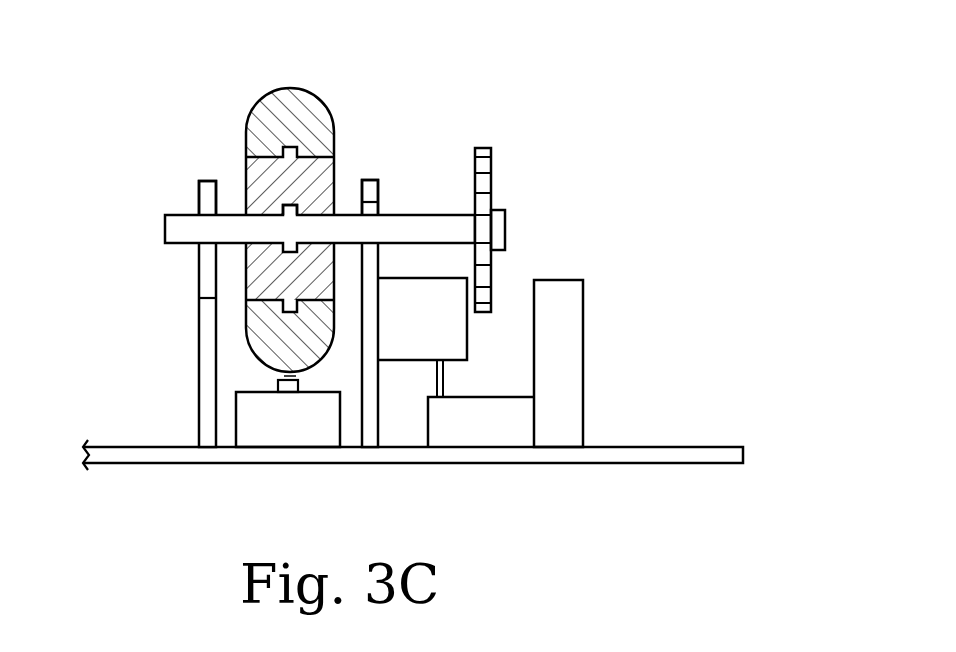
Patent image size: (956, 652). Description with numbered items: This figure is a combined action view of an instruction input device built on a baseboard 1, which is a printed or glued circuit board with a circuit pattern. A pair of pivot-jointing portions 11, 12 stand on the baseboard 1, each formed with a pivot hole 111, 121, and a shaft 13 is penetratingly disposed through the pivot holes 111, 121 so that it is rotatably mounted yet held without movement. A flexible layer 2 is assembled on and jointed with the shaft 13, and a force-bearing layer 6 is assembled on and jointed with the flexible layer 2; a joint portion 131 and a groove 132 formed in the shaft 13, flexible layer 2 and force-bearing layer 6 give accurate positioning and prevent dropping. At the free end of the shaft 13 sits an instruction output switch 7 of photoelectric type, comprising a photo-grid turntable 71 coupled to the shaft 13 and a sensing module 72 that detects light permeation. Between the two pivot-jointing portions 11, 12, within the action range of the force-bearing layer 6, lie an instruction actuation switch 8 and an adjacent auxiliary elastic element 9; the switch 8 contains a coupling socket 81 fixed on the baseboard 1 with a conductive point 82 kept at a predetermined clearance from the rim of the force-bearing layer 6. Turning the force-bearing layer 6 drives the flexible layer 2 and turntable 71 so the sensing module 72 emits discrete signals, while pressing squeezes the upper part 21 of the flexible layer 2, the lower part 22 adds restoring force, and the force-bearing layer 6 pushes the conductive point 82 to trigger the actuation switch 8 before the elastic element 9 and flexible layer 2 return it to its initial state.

The baseboard 1 is at (533, 455).
The pivot-jointing portion 11 is at (142, 314).
The pivot hole 111 is at (197, 209).
The pivot-jointing portion 12 is at (408, 328).
The pivot hole 121 is at (374, 212).
The shaft 13 is at (293, 186).
The joint portion 131 is at (280, 206).
The groove 132 is at (304, 205).
The flexible layer 2 is at (272, 206).
The upper part 21 is at (298, 86).
The lower part 22 is at (256, 288).
The force-bearing layer 6 is at (300, 100).
The instruction output switch 7 is at (527, 238).
The photo-grid turntable 71 is at (483, 182).
The sensing module 72 is at (442, 335).
The instruction actuation switch 8 is at (248, 453).
The coupling socket 81 is at (253, 437).
The conductive point 82 is at (293, 393).
The auxiliary elastic element 9 is at (300, 380).